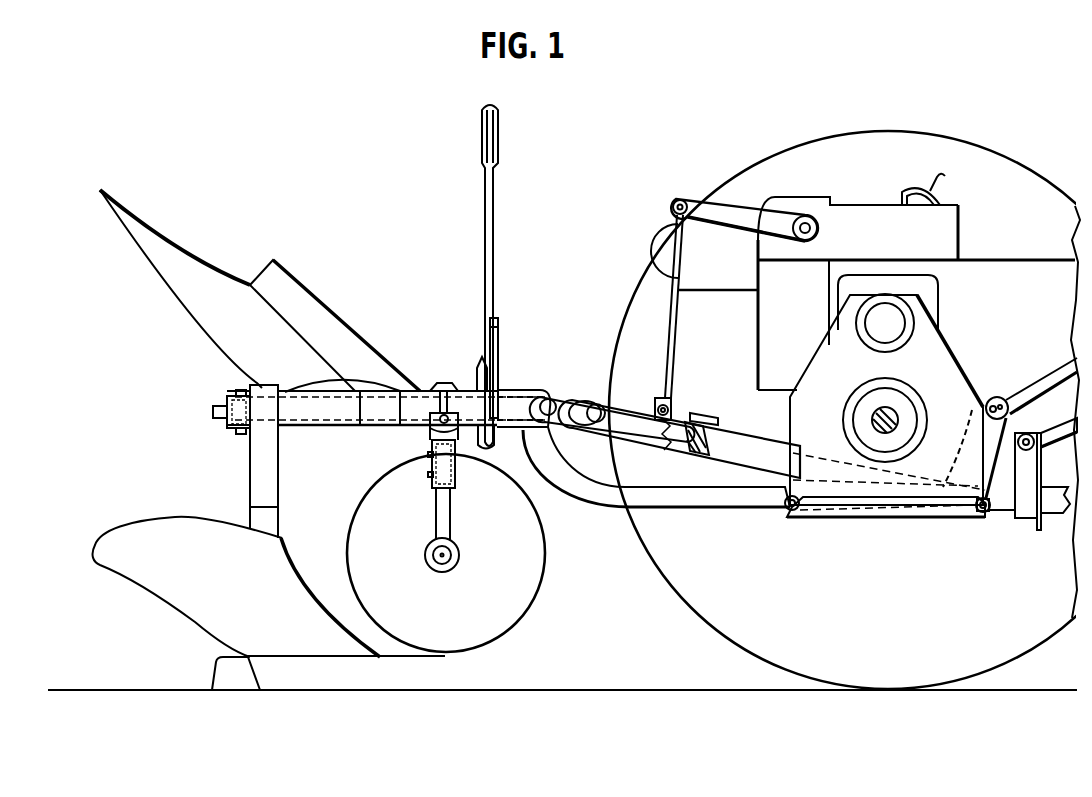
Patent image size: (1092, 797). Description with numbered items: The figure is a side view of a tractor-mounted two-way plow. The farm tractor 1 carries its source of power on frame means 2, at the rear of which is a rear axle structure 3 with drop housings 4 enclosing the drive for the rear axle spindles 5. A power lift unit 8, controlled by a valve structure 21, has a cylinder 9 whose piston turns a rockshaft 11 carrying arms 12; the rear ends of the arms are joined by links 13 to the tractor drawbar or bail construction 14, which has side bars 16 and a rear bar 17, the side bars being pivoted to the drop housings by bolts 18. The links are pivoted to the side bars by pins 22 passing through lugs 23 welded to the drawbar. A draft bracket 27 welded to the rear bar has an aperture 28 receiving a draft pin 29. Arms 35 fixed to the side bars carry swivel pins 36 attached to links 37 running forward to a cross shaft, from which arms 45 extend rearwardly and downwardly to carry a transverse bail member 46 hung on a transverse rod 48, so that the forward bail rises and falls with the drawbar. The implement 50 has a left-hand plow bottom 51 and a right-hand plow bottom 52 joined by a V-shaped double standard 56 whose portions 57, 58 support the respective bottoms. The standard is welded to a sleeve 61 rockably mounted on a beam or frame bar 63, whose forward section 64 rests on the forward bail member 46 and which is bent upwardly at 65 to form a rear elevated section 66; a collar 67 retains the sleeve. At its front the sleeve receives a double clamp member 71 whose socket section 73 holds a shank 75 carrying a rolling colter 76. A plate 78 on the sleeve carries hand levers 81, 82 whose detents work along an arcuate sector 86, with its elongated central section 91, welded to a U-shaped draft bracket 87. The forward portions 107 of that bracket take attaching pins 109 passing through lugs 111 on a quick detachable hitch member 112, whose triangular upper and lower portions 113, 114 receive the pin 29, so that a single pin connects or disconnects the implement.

The farm tractor 1 is at (1017, 246).
The frame means 2 is at (1040, 272).
The rear axle structure 3 is at (920, 258).
The drop housing 4 is at (953, 372).
The rear axle spindle 5 is at (884, 418).
The power lift unit 8 is at (882, 204).
The cylinder 9 is at (945, 212).
The rockshaft 11 is at (805, 226).
The arm 12 is at (722, 215).
The link 13 is at (672, 327).
The tractor drawbar or bail construction 14 is at (757, 440).
The side bar 16 is at (766, 458).
The rear bar 17 is at (598, 404).
The bolt 18 is at (975, 517).
The valve structure 21 is at (913, 186).
The pin 22 is at (655, 404).
The lug 23 is at (668, 406).
The draft bracket 27 is at (672, 437).
The aperture 28 is at (699, 450).
The draft pin 29 is at (700, 413).
The arm 35 is at (987, 434).
The swivel pin 36 is at (1000, 398).
The link 37 is at (1045, 382).
The arm 45 is at (1060, 432).
The transverse bail member 46 is at (1025, 508).
The transverse rod 48 is at (1028, 436).
The two-way plow implement 50 is at (248, 232).
The left-hand plow bottom 51 is at (186, 292).
The right-hand plow bottom 52 is at (177, 598).
The double plow bottom standard 56 is at (242, 456).
The standard portion 57 is at (258, 385).
The standard portion 58 is at (262, 485).
The sleeve 61 is at (350, 390).
The beam or frame bar 63 is at (624, 513).
The forward section 64 is at (1047, 505).
The bend 65 is at (543, 467).
The rear elevated section 66 is at (386, 405).
The collar 67 is at (213, 408).
The double clamp member 71 is at (443, 382).
The socket section 73 is at (432, 455).
The shank 75 is at (450, 500).
The rolling colter 76 is at (503, 596).
The plate 78 is at (478, 387).
The hand lever 81 is at (458, 421).
The hand lever 82 is at (494, 220).
The arcuate sector 86 is at (500, 347).
The draft bracket 87 is at (516, 384).
The central section 91 is at (498, 328).
The forward portion 107 is at (546, 398).
The attaching pin 109 is at (552, 397).
The apertured lug 111 is at (560, 424).
The quick detachable saddle or hitch member 112 is at (638, 452).
The upper portion 113 is at (633, 407).
The lower portion 114 is at (640, 447).